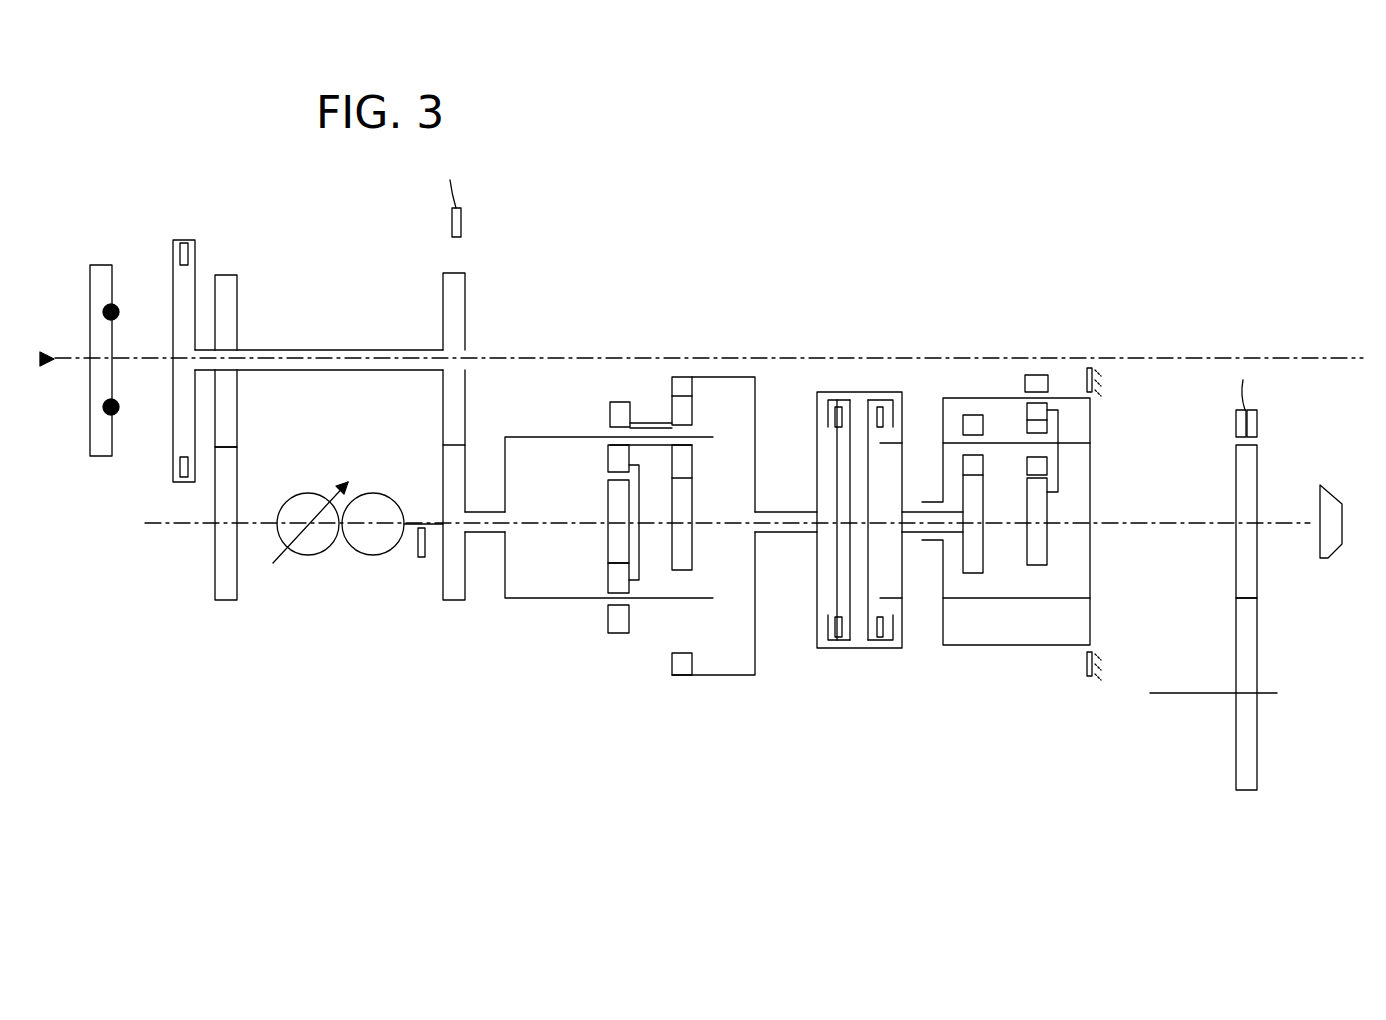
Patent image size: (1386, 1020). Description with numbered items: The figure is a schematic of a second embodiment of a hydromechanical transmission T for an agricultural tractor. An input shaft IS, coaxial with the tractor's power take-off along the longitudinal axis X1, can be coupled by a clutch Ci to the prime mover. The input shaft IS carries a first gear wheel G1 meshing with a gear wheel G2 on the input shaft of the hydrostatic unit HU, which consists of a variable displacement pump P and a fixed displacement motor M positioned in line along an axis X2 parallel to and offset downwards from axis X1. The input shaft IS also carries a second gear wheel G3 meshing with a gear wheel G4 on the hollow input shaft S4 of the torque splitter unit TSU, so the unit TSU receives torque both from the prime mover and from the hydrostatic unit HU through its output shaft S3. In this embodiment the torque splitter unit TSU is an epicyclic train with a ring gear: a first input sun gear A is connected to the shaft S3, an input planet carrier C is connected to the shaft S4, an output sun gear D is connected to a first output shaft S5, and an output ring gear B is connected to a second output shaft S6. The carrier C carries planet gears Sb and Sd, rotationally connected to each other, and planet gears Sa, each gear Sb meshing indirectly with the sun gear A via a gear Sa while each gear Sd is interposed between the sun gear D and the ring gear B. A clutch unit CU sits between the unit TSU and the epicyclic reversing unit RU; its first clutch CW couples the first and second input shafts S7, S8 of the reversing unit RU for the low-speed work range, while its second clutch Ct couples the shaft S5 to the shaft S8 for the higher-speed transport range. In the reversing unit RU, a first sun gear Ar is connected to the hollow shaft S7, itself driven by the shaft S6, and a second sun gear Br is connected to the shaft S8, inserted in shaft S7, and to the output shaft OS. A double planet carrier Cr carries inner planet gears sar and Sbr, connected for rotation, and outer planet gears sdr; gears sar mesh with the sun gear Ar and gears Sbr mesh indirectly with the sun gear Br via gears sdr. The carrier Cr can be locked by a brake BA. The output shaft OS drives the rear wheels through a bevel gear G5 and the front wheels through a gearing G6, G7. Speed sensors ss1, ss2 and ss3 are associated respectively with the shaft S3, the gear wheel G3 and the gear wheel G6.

The axis X1 is at (78, 362).
The axis X2 is at (178, 525).
The clutch Ci is at (178, 253).
The input shaft IS is at (325, 350).
The first gear wheel G1 is at (225, 275).
The gear wheel G2 is at (225, 602).
The second gear wheel G3 is at (465, 312).
The gear wheel G4 is at (452, 602).
The second sensor ss2 is at (461, 215).
The hydrostatic unit HU is at (332, 543).
The variable displacement pump P is at (300, 493).
The fixed displacement motor M is at (375, 493).
The first sensor ss1 is at (420, 558).
The input shaft S4 is at (483, 534).
The torque splitter unit TSU is at (630, 565).
The input planet carrier C is at (575, 600).
The first input sun gear A is at (613, 500).
The output sun gear D is at (692, 548).
The output shaft S3 is at (592, 527).
The first output shaft S5 is at (725, 520).
The planet gear Sb is at (612, 412).
The output ring gear B is at (680, 385).
The planet gear Sd is at (692, 405).
The planet gear Sa is at (617, 633).
The second output shaft S6 is at (780, 512).
The clutch unit CU is at (861, 484).
The second clutch Ct is at (838, 650).
The first clutch CW is at (880, 650).
The first input shaft S7 is at (910, 530).
The second input shaft S8 is at (915, 515).
The reversing unit RU is at (1050, 551).
The double planet carrier Cr is at (1090, 425).
The first sun gear Ar is at (973, 575).
The planet gear sar is at (975, 415).
The second sun gear Br is at (1037, 567).
The planet gear sdr is at (1037, 375).
The planet gear Sbr is at (1047, 465).
The brake BA is at (1105, 370).
The transmission T is at (1027, 258).
The output shaft OS is at (1135, 530).
The bevel gear G5 is at (1328, 560).
The gear wheel G7 is at (1258, 633).
The third sensor ss3 is at (1258, 423).
The gear wheel G6 is at (1258, 475).